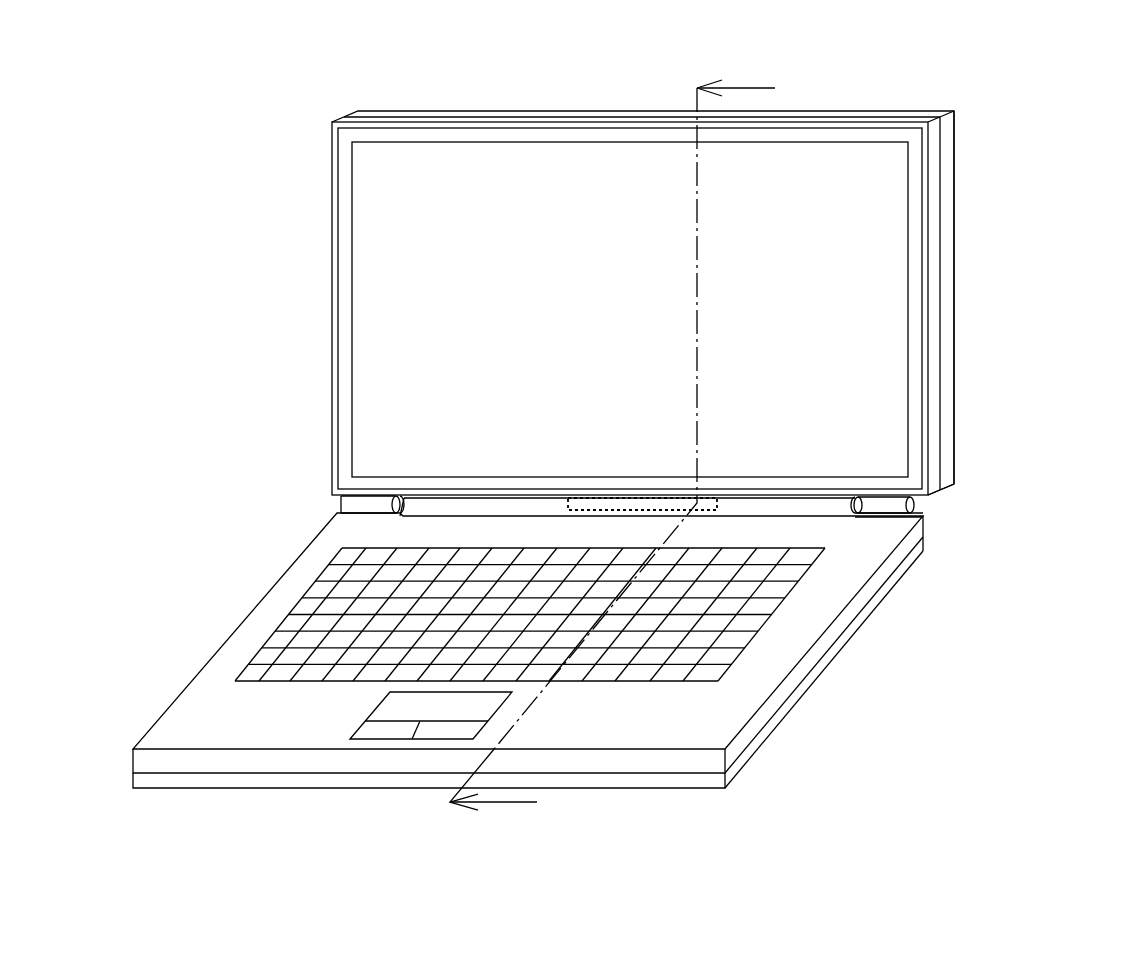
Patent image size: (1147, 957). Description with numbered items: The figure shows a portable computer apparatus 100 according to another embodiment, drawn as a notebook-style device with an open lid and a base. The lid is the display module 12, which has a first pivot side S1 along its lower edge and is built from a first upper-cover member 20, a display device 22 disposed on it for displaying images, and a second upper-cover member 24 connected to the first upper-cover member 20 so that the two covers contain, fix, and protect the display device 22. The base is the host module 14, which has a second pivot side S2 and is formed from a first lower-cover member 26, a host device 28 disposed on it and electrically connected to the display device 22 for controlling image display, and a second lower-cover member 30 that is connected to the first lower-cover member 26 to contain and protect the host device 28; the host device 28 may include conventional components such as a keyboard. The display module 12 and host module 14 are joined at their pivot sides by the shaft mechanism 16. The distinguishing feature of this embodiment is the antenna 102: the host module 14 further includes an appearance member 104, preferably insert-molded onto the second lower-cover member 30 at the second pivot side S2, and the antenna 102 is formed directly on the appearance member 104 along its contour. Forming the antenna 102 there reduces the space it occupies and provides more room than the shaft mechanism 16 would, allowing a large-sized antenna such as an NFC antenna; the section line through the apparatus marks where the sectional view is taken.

The portable computer apparatus 100 is at (1000, 142).
The display module 12 is at (1023, 258).
The host module 14 is at (935, 637).
The shaft mechanism 16 is at (340, 501).
The first upper-cover member 20 is at (948, 297).
The display device 22 is at (870, 326).
The second upper-cover member 24 is at (933, 378).
The first lower-cover member 26 is at (765, 732).
The host device 28 is at (728, 657).
The second lower-cover member 30 is at (795, 632).
The antenna 102 is at (617, 498).
The appearance member 104 is at (817, 508).
The first pivot side S1 is at (930, 494).
The second pivot side S2 is at (915, 508).